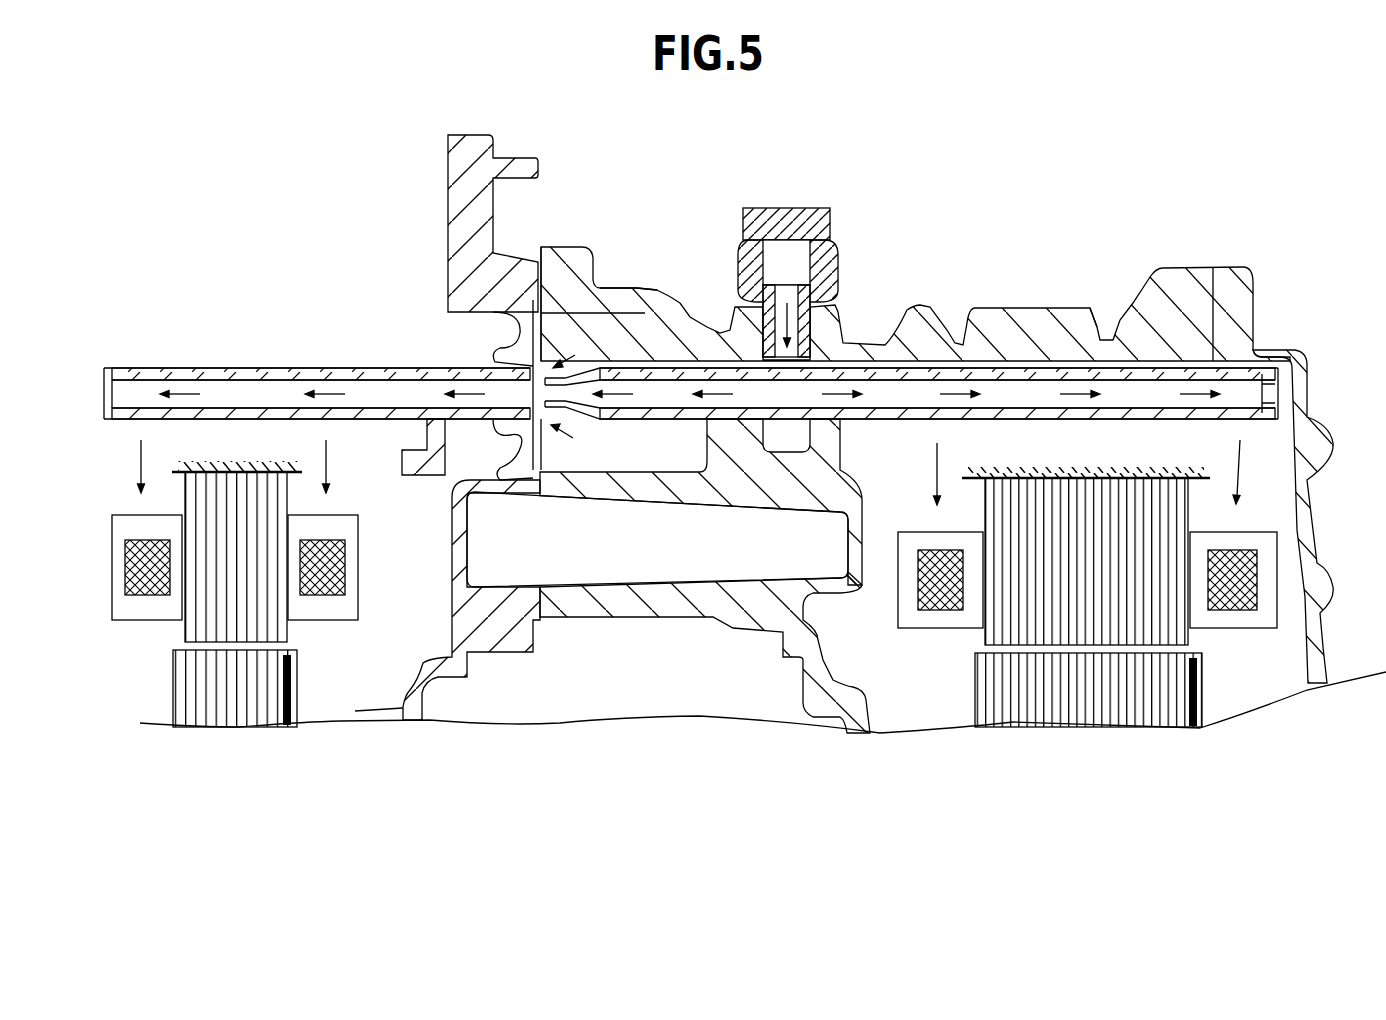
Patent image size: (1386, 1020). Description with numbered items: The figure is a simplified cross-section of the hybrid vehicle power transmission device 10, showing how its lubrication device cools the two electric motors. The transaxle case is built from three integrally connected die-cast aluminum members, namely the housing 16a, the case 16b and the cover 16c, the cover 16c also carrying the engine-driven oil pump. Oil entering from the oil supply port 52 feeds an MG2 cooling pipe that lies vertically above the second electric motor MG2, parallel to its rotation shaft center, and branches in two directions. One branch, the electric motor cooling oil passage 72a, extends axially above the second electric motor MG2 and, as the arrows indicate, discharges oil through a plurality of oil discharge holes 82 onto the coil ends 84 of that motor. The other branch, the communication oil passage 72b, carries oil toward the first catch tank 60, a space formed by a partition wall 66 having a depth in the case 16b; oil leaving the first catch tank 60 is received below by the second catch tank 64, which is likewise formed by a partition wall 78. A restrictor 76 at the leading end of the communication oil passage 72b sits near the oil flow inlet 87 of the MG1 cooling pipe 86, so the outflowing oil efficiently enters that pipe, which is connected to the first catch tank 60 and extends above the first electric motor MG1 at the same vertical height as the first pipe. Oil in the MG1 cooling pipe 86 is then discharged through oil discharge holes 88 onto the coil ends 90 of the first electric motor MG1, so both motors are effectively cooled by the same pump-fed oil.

The power transmission device 10 is at (966, 194).
The housing 16a is at (462, 187).
The case 16b is at (1045, 335).
The cover 16c is at (1320, 445).
The oil supply port 52 is at (728, 242).
The first catch tank 60 is at (650, 335).
The second catch tank 64 is at (693, 548).
The partition wall 66 is at (602, 485).
The electric motor cooling oil passage 72a is at (1105, 367).
The communication oil passage 72b is at (613, 422).
The restrictor 76 is at (563, 380).
The partition wall 78 is at (615, 603).
The oil discharge holes 82 is at (922, 421).
The coil ends 84 is at (940, 595).
The MG1 cooling pipe 86 is at (283, 362).
The oil flow inlet 87 is at (545, 365).
The oil discharge holes 88 is at (137, 421).
The coil ends 90 is at (150, 575).
The first electric motor MG1 is at (229, 603).
The second electric motor MG2 is at (1081, 602).